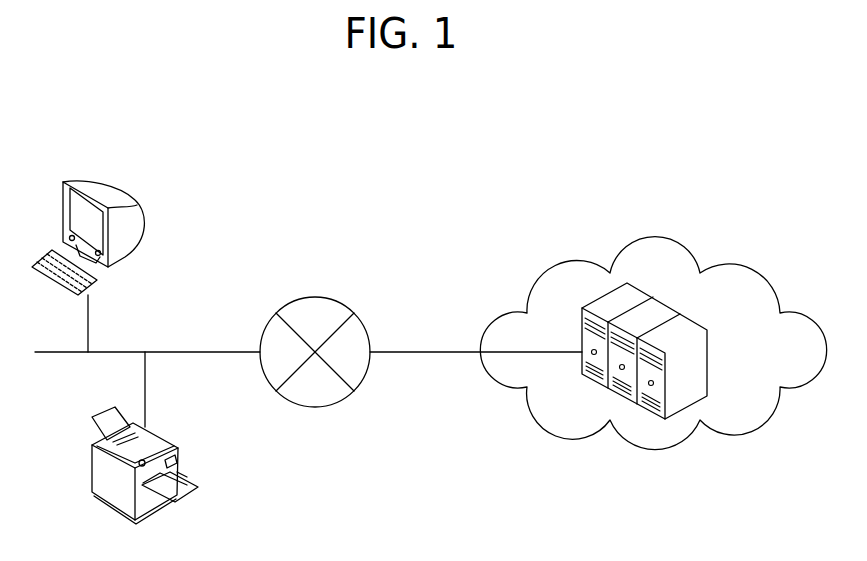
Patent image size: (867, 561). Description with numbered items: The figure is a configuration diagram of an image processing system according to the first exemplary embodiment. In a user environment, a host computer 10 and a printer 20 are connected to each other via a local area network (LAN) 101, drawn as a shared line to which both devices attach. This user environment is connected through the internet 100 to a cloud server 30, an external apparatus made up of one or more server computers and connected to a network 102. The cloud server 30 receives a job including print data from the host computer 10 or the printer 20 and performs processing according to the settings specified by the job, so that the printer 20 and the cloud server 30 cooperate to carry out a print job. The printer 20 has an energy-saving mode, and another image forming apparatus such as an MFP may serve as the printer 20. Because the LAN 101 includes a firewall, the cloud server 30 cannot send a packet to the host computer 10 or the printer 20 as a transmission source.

The host computer 10 is at (99, 182).
The printer 20 is at (160, 437).
The cloud server 30 is at (700, 327).
The internet 100 is at (317, 298).
The local area network (LAN) 101 is at (200, 350).
The network 102 is at (435, 352).